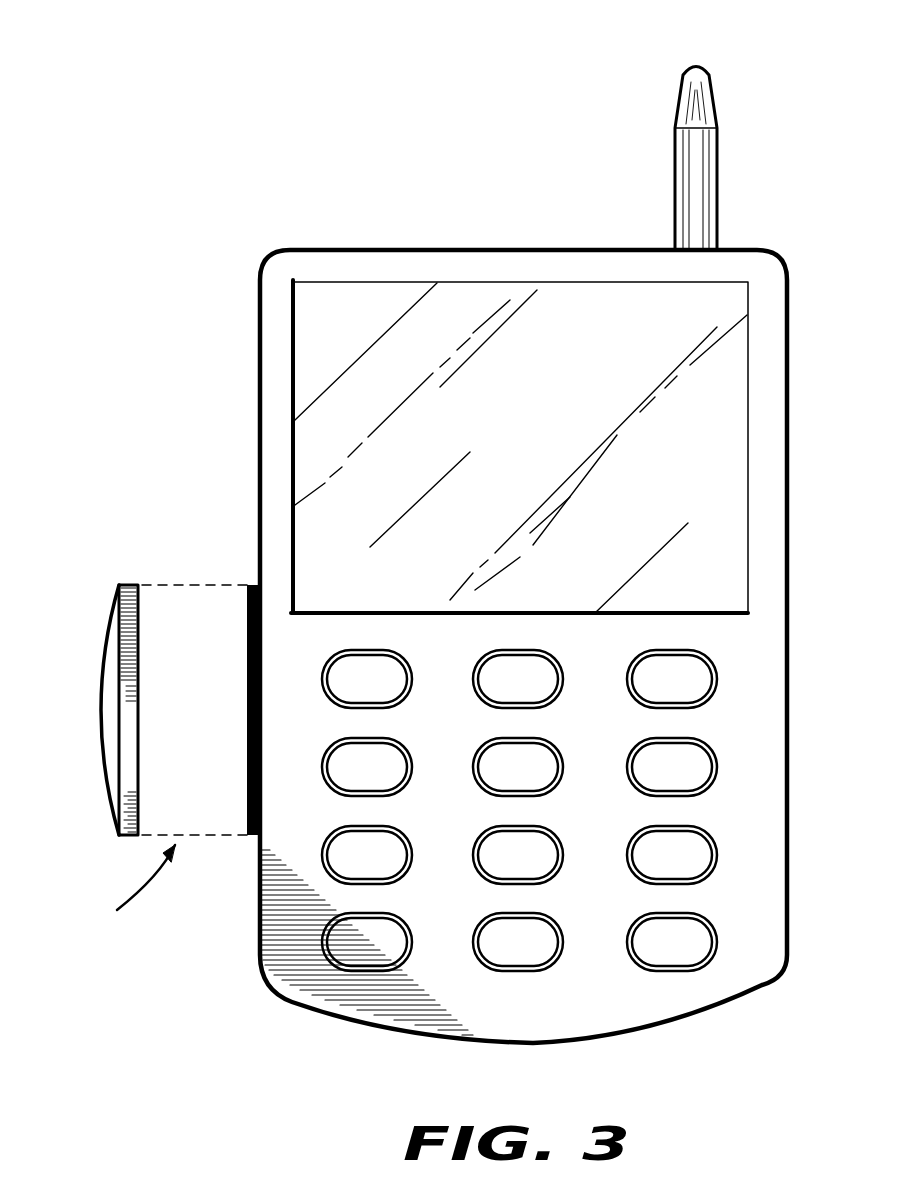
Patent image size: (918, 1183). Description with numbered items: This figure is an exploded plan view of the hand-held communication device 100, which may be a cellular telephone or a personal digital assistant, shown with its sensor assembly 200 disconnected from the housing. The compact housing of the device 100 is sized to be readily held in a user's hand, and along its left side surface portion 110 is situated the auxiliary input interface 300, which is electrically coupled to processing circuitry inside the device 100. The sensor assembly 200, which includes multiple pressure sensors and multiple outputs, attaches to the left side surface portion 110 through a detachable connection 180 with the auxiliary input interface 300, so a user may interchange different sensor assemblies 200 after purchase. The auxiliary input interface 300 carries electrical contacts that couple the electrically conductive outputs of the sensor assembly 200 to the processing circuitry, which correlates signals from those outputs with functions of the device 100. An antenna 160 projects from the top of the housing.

The hand-held communication device 100 is at (501, 532).
The left side surface portion 110 is at (260, 282).
The antenna 160 is at (677, 93).
The detachable connection 180 is at (126, 888).
The sensor assembly 200 is at (102, 698).
The auxiliary input interface 300 is at (248, 620).